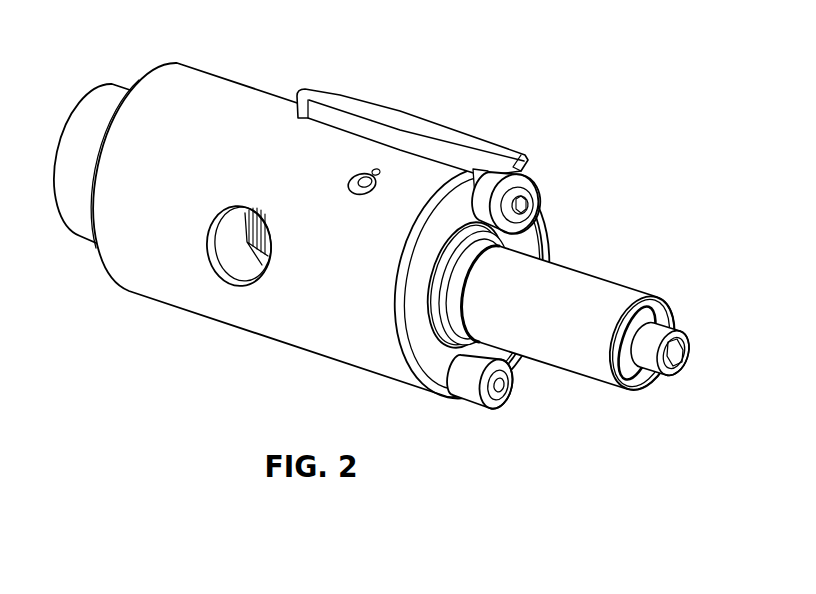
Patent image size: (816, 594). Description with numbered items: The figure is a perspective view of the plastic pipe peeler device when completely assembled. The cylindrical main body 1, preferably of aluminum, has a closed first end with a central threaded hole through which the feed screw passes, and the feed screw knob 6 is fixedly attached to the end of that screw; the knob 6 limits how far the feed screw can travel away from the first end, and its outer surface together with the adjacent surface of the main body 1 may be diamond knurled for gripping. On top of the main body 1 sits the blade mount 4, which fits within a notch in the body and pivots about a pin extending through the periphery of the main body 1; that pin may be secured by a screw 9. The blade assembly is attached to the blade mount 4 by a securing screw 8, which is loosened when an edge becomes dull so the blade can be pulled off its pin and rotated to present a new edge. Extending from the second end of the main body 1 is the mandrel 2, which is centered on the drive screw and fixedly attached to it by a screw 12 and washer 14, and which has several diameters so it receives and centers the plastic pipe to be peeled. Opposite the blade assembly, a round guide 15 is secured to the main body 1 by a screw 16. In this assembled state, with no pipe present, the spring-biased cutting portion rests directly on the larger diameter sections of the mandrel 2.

The main body 1 is at (168, 70).
The mandrel 2 is at (612, 276).
The blade mount 4 is at (361, 97).
The feed screw knob 6 is at (93, 112).
The securing screw 8 is at (533, 205).
The screw 9 is at (362, 176).
The screw 12 is at (674, 329).
The washer 14 is at (672, 326).
The round guide 15 is at (525, 158).
The screw 16 is at (503, 394).